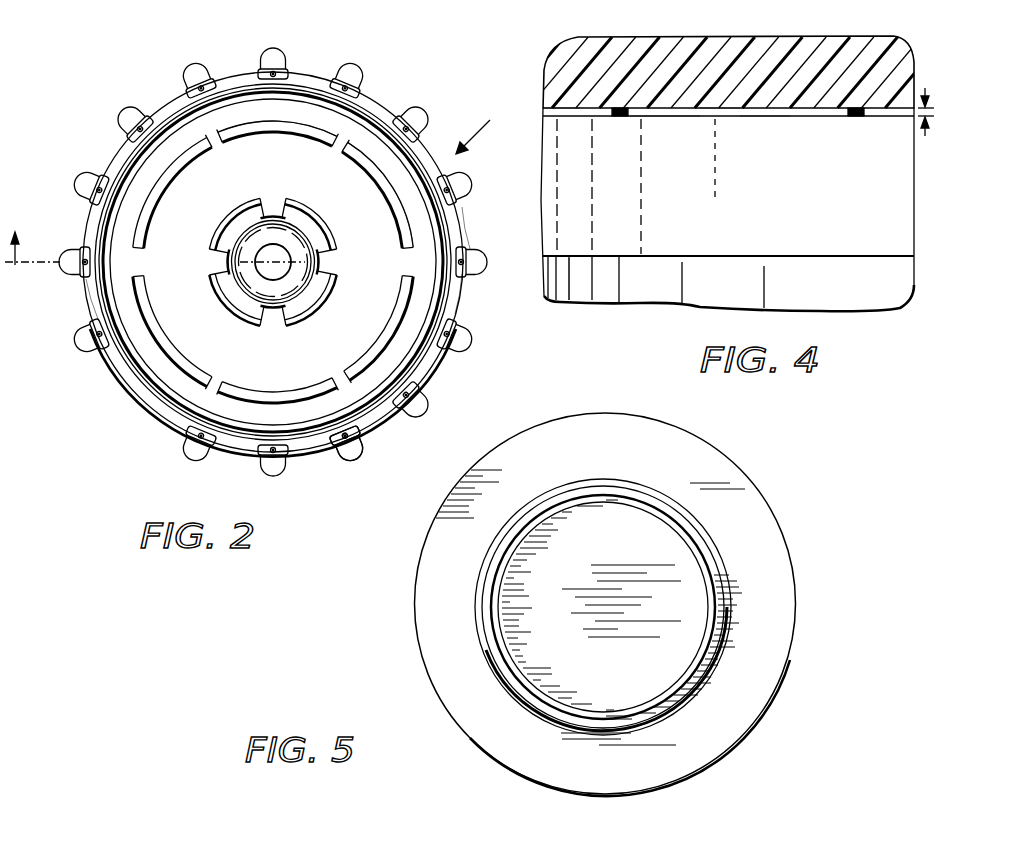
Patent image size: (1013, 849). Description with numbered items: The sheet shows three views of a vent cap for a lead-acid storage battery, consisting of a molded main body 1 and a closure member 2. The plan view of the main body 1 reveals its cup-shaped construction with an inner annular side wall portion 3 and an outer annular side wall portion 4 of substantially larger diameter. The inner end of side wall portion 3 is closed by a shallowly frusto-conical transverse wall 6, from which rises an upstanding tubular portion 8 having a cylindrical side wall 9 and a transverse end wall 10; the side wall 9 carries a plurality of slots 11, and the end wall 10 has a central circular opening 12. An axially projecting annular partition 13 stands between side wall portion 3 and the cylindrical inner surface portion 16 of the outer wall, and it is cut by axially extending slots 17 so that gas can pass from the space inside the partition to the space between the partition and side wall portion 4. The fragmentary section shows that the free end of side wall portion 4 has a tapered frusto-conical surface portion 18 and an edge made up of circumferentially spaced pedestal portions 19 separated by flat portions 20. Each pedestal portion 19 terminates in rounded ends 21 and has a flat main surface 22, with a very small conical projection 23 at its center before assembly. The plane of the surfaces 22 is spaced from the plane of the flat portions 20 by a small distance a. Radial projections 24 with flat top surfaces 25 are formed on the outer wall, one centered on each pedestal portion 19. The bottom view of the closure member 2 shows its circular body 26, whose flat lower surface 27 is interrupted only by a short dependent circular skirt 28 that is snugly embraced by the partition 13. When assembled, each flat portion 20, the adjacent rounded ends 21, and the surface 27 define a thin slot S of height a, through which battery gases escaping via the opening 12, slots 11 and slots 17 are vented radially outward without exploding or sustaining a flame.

In FIG. 2, the main body 1 is at (247, 179).
In FIG. 4, the main body 1 is at (662, 312).
In FIG. 4, the closure member 2 is at (866, 48).
In FIG. 5, the closure member 2 is at (422, 666).
In FIG. 2, the inner annular side wall portion 3 is at (378, 206).
In FIG. 2, the outer annular side wall portion 4 is at (232, 68).
In FIG. 4, the outer annular side wall portion 4 is at (608, 304).
In FIG. 2, the transverse wall 6 is at (294, 166).
In FIG. 2, the upstanding tubular portion 8 is at (298, 344).
In FIG. 2, the cylindrical side wall 9 is at (328, 318).
In FIG. 2, the transverse end wall 10 is at (258, 243).
In FIG. 2, the slots 11 is at (212, 272).
In FIG. 2, the circular opening 12 is at (300, 245).
In FIG. 2, the annular partition 13 is at (272, 136).
In FIG. 2, the inner surface portion 16 is at (180, 112).
In FIG. 4, the inner surface portion 16 is at (856, 296).
In FIG. 2, the axially extending slots 17 is at (342, 146).
In FIG. 2, the frusto-conical surface portion 18 is at (240, 88).
In FIG. 4, the frusto-conical surface portion 18 is at (856, 228).
In FIG. 2, the pedestal portions 19 is at (352, 458).
In FIG. 4, the pedestal portions 19 is at (545, 110).
In FIG. 2, the flat portions 20 is at (463, 300).
In FIG. 4, the flat portions 20 is at (660, 115).
In FIG. 2, the rounded ends 21 is at (466, 230).
In FIG. 4, the rounded ends 21 is at (636, 117).
In FIG. 2, the flat main surfaces 22 is at (364, 438).
In FIG. 2, the conical projection 23 is at (280, 264).
In FIG. 2, the radial projections 24 is at (302, 64).
In FIG. 2, the flat top surfaces 25 is at (272, 468).
In FIG. 5, the body 26 is at (776, 524).
In FIG. 4, the flat lower surface 27 is at (752, 117).
In FIG. 5, the flat lower surface 27 is at (454, 574).
In FIG. 5, the circular skirt 28 is at (534, 522).
In FIG. 4, the slot S is at (716, 110).
In FIG. 4, the distance a is at (926, 122).